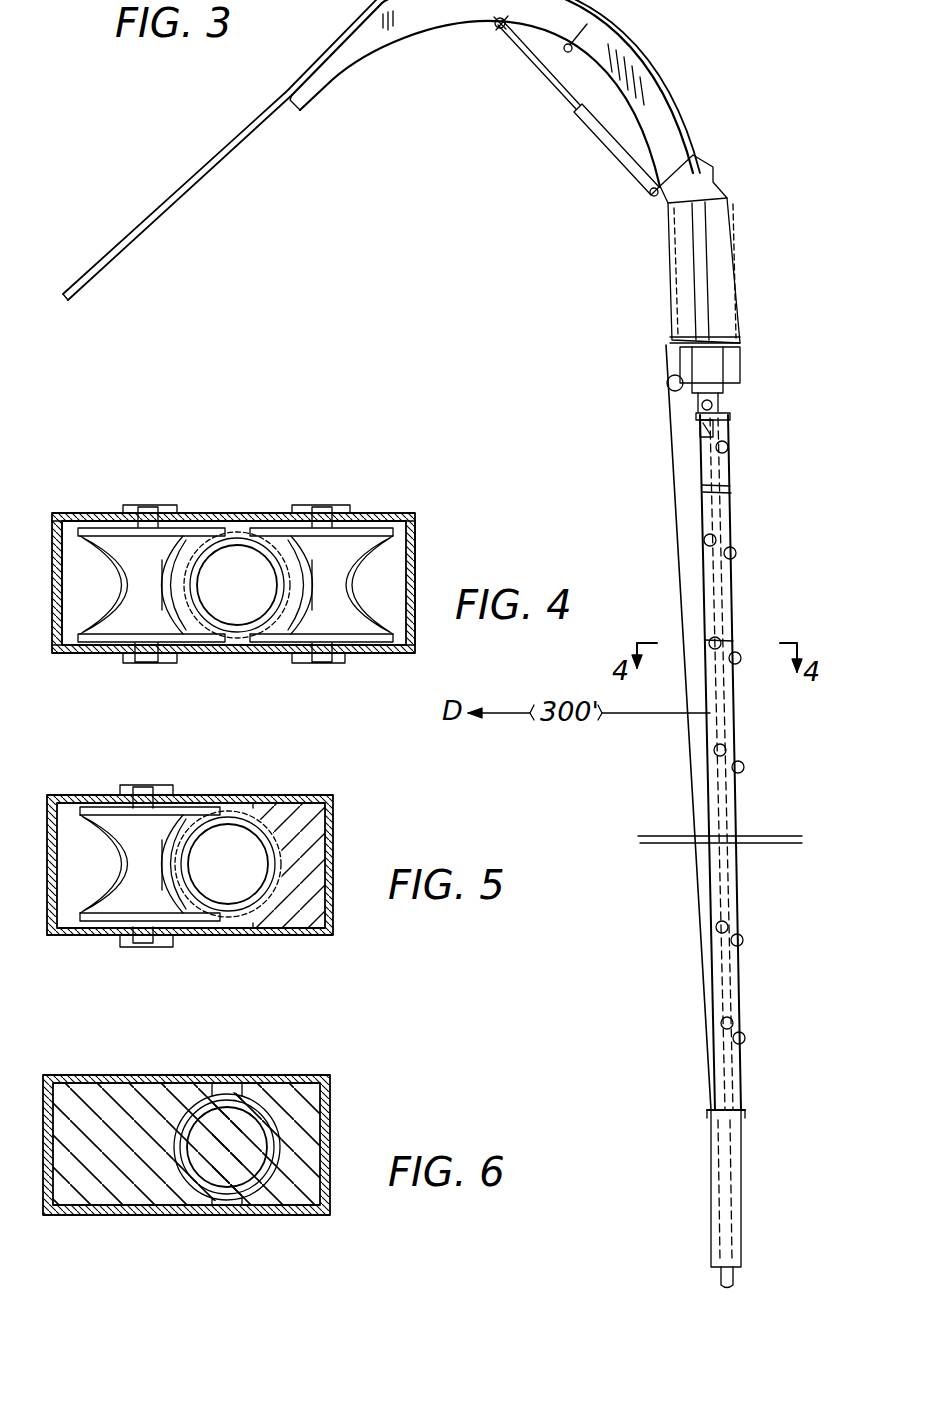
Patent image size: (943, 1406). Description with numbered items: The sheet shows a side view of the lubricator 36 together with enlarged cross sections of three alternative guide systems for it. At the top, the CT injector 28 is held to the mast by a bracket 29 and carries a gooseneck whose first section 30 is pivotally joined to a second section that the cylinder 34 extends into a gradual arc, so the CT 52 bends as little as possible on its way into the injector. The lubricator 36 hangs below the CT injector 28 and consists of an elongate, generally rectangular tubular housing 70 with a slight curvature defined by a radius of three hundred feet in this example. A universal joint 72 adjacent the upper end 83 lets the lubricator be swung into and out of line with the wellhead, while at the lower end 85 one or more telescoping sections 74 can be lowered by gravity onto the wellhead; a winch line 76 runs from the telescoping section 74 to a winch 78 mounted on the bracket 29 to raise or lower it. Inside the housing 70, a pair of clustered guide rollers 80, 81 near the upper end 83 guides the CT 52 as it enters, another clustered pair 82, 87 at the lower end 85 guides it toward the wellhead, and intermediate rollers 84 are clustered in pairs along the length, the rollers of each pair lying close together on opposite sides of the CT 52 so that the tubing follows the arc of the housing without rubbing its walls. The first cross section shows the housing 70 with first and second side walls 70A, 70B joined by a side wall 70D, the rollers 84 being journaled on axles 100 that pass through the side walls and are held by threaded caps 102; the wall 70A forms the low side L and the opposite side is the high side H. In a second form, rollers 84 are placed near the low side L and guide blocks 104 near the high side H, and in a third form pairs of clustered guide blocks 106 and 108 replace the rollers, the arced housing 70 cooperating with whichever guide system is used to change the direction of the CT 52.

In FIG. 3, the CT injector 28 is at (752, 262).
In FIG. 3, the bracket 29 is at (740, 365).
In FIG. 3, the first section of guide or gooseneck 30 is at (612, 30).
In FIG. 3, the cylinder 34 is at (568, 106).
In FIG. 3, the lubricator 36 is at (752, 517).
In FIG. 3, the CT 52 is at (173, 197).
In FIG. 4, the CT 52 is at (240, 645).
In FIG. 5, the CT 52 is at (247, 815).
In FIG. 6, the CT 52 is at (226, 1083).
In FIG. 3, the housing 70 is at (735, 610).
In FIG. 4, the housing 70 is at (95, 513).
In FIG. 5, the housing 70 is at (310, 795).
In FIG. 6, the housing 70 is at (297, 1075).
In FIG. 4, the first side wall 70A is at (52, 620).
In FIG. 4, the second side wall 70B is at (410, 556).
In FIG. 4, the side wall 70D is at (255, 513).
In FIG. 3, the universal joint 72 is at (714, 408).
In FIG. 3, the telescoping section 74 is at (740, 1220).
In FIG. 3, the winch line 76 is at (690, 762).
In FIG. 3, the winch 78 is at (665, 385).
In FIG. 3, the guide roller 80 is at (700, 433).
In FIG. 3, the guide roller 81 is at (729, 450).
In FIG. 3, the guide roller 82 is at (720, 1026).
In FIG. 3, the upper end 83 is at (728, 428).
In FIG. 3, the intermediate rollers 84 is at (737, 553).
In FIG. 4, the intermediate rollers 84 is at (185, 540).
In FIG. 5, the intermediate rollers 84 is at (122, 900).
In FIG. 3, the lower end 85 is at (742, 1100).
In FIG. 3, the guide roller 87 is at (746, 1039).
In FIG. 4, the axles 100 is at (147, 662).
In FIG. 4, the threaded caps 102 is at (133, 505).
In FIG. 5, the guide blocks 104 is at (290, 905).
In FIG. 6, the guide blocks 106 is at (127, 1190).
In FIG. 6, the guide blocks 108 is at (288, 1190).
In FIG. 5, the high side H is at (338, 822).
In FIG. 6, the high side H is at (333, 1115).
In FIG. 5, the low side L is at (37, 900).
In FIG. 6, the low side L is at (37, 1185).